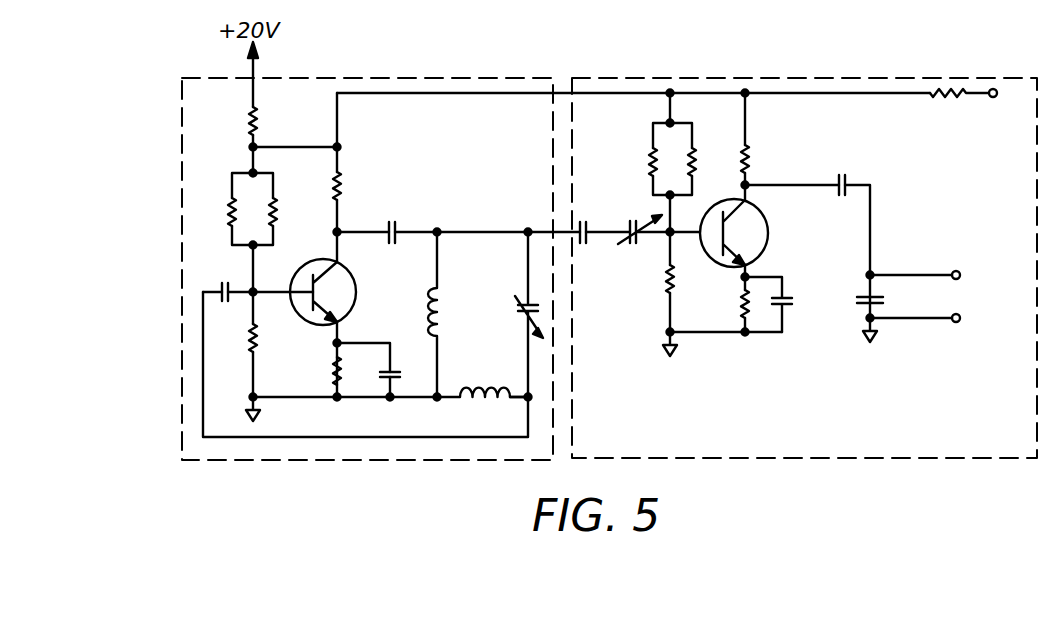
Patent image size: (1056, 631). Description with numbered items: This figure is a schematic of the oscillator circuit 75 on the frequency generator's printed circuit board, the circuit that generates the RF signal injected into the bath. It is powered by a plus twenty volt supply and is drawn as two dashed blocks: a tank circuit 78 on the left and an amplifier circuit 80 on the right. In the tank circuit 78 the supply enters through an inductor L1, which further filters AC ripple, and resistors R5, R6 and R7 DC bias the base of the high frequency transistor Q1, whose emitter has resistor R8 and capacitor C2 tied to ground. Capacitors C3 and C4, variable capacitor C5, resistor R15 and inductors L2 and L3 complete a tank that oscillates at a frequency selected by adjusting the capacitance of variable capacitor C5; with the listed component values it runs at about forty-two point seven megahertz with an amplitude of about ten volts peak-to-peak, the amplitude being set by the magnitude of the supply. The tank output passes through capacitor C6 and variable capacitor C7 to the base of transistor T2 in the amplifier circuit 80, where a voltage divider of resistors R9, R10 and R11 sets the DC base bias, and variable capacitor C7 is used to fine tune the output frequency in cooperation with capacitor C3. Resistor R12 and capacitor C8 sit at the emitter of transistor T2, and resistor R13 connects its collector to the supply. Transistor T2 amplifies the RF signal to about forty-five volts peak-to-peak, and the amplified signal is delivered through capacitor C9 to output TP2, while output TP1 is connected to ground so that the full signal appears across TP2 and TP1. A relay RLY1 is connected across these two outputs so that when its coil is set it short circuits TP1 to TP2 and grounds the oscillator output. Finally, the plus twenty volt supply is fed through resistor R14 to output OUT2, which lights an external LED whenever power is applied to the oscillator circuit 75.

The oscillator circuit 75 is at (565, 68).
The tank circuit 78 is at (310, 462).
The amplifier circuit 80 is at (860, 458).
The inductor L1 is at (273, 121).
The resistor R5 is at (232, 202).
The resistor R6 is at (276, 206).
The resistor R15 is at (340, 193).
The capacitor C4 is at (392, 220).
The capacitor C3 is at (222, 279).
The transistor Q1 is at (354, 281).
The resistor R7 is at (258, 337).
The resistor R8 is at (331, 370).
The capacitor C2 is at (406, 372).
The inductor L2 is at (450, 314).
The inductor L3 is at (482, 379).
The variable capacitor C5 is at (514, 310).
The capacitor C6 is at (587, 217).
The variable capacitor C7 is at (639, 242).
The resistor R9 is at (649, 160).
The resistor R10 is at (695, 153).
The resistor R11 is at (666, 279).
The resistor R12 is at (740, 305).
The capacitor C8 is at (787, 304).
The resistor R13 is at (750, 161).
The transistor T2 is at (777, 234).
The capacitor C9 is at (838, 172).
The resistor R14 is at (932, 114).
The output OUT2 is at (993, 107).
The output TP2 is at (939, 275).
The output TP1 is at (939, 318).
The relay RLY1 is at (898, 302).